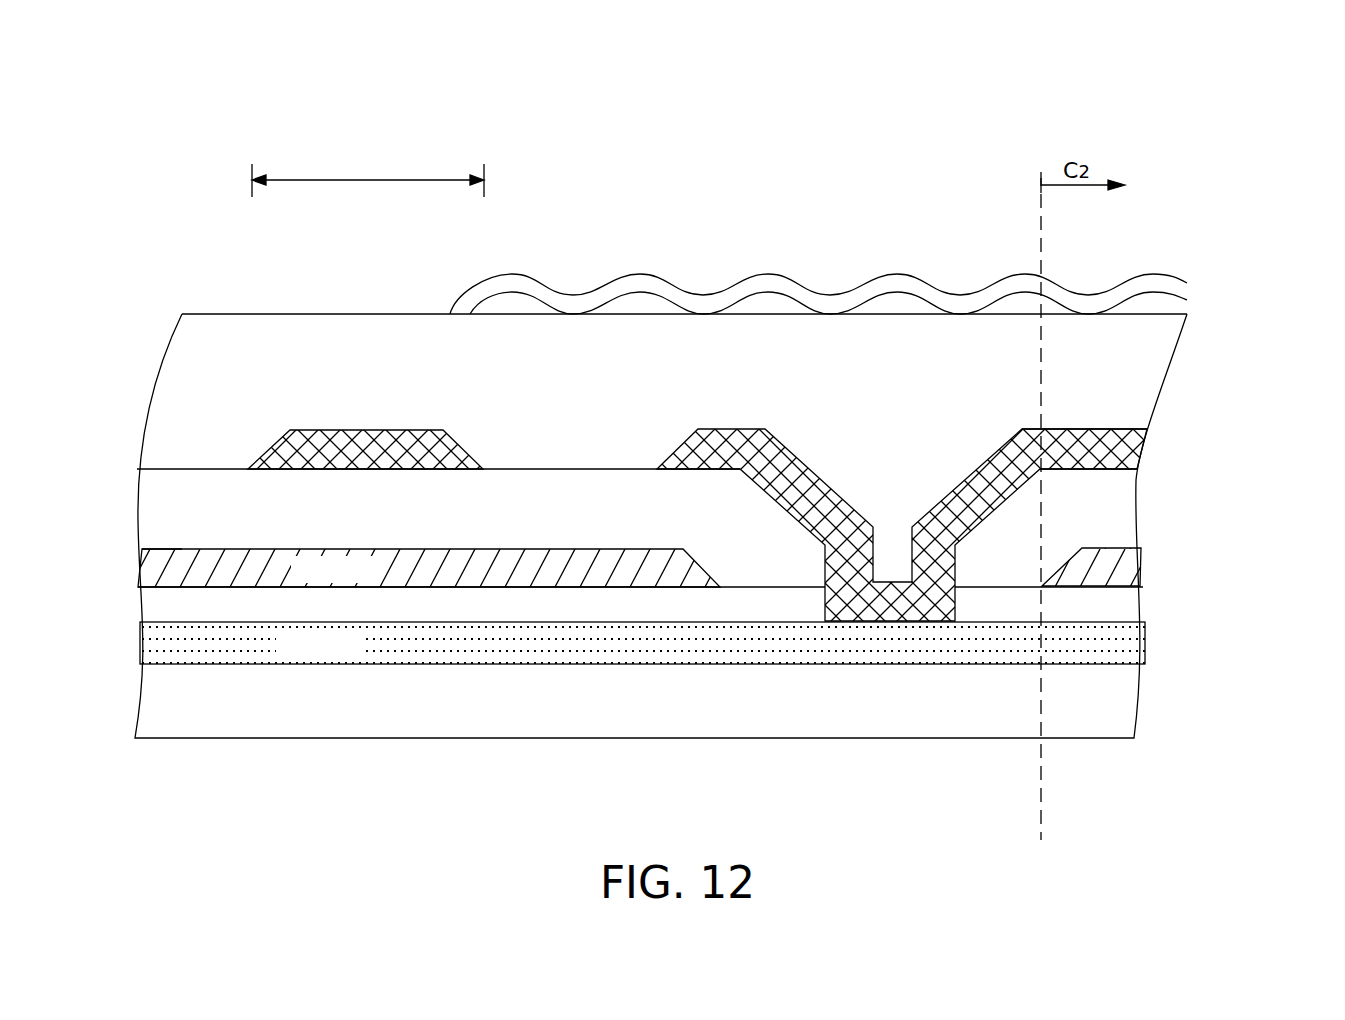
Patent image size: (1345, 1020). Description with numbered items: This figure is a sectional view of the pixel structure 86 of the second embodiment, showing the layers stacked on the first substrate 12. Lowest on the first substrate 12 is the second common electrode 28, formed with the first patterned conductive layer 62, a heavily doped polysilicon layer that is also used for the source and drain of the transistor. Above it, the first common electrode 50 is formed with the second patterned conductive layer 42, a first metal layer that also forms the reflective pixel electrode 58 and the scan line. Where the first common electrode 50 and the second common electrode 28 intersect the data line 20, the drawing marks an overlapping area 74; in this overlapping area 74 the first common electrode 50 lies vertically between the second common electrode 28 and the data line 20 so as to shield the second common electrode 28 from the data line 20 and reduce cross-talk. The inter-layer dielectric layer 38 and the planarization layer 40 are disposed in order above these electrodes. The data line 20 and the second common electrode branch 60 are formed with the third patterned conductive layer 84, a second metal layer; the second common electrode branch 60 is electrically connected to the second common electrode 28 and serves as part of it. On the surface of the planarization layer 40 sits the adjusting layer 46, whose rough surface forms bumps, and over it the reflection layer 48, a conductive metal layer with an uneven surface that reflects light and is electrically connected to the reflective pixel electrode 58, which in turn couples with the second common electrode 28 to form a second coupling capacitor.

The first substrate 12 is at (1117, 722).
The data line 20 is at (340, 450).
The second common electrode 28 is at (173, 643).
The inter-layer dielectric (ILD) layer 38 is at (1127, 507).
The planarization layer 40 is at (1133, 381).
The second patterned conductive layer 42 is at (181, 549).
The adjusting layer 46 is at (1140, 305).
The reflection layer 48 is at (1178, 295).
The first common electrode 50 is at (178, 562).
The reflective pixel electrode 58 is at (1127, 563).
The second common electrode branch 60 is at (978, 485).
The first patterned conductive layer 62 is at (190, 622).
The overlapping area 74 is at (368, 173).
The third patterned conductive layer 84 is at (724, 361).
The pixel structure 86 is at (1202, 146).